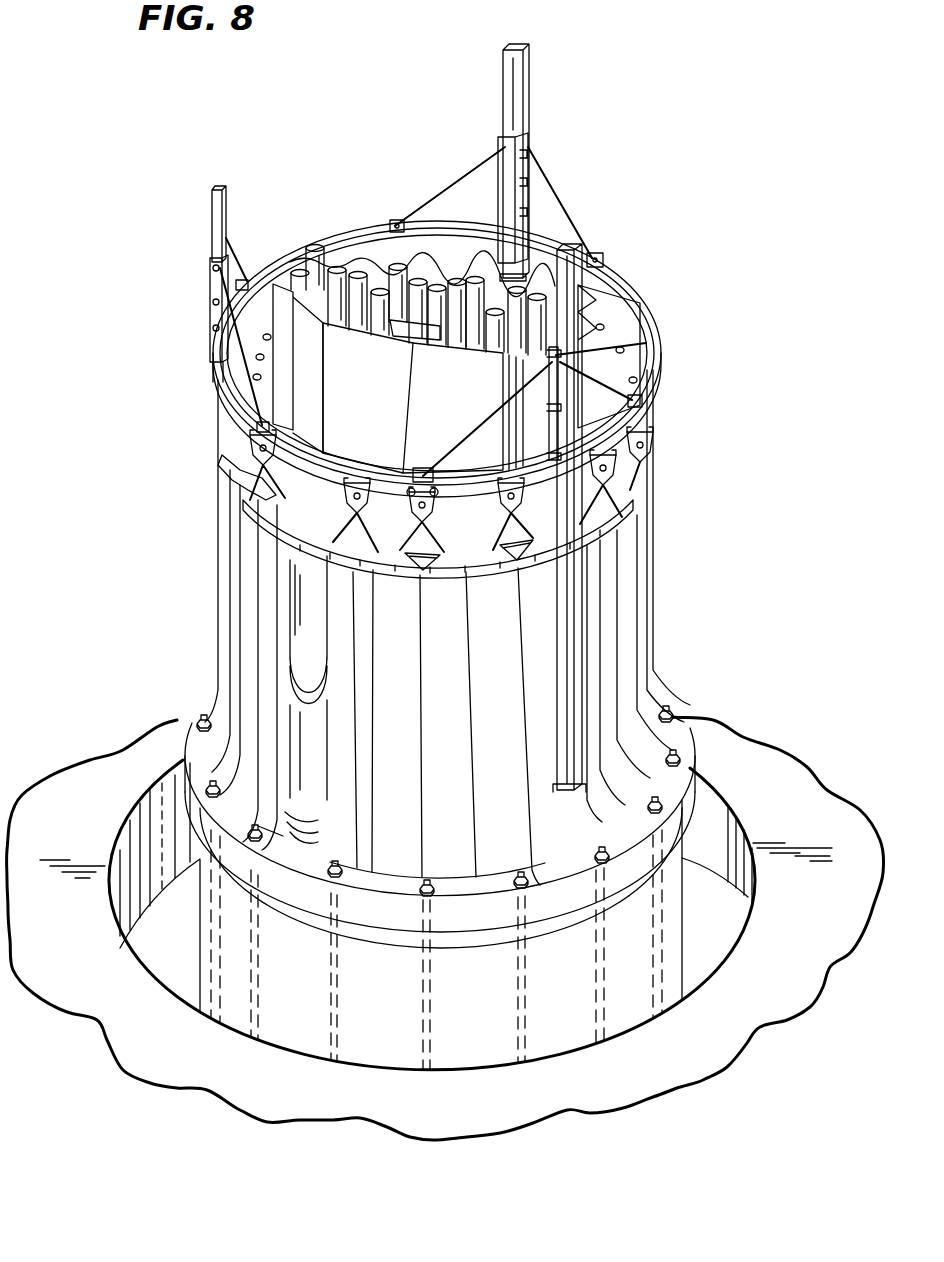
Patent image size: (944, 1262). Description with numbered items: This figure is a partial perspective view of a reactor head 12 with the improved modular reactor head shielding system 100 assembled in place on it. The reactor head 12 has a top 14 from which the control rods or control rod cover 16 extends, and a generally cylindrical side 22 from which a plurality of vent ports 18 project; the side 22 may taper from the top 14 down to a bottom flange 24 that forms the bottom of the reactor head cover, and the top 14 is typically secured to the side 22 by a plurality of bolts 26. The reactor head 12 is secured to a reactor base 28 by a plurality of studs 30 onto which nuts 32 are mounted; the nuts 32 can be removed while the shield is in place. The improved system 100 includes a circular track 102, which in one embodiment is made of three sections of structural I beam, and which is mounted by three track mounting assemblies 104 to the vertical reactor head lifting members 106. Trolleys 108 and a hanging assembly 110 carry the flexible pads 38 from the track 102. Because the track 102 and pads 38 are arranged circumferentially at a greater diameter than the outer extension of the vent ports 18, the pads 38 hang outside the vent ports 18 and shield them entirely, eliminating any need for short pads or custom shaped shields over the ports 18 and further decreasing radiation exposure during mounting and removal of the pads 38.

The reactor head 12 is at (616, 330).
The top 14 is at (621, 414).
The control rod cover 16 is at (461, 411).
The vent ports 18 is at (332, 549).
The cylindrical side 22 is at (255, 491).
The bottom flange 24 is at (199, 758).
The bolts 26 is at (648, 366).
The reactor base 28 is at (486, 1030).
The studs 30 is at (425, 1010).
The nuts 32 is at (662, 806).
The flexible pads 38 is at (410, 726).
The improved modular reactor head shielding system 100 is at (676, 504).
The circular track 102 is at (331, 238).
The track mounting assembly 104 is at (510, 176).
The vertical reactor head lifting members 106 is at (521, 80).
The trolleys 108 is at (466, 556).
The hanging assembly 110 is at (403, 530).